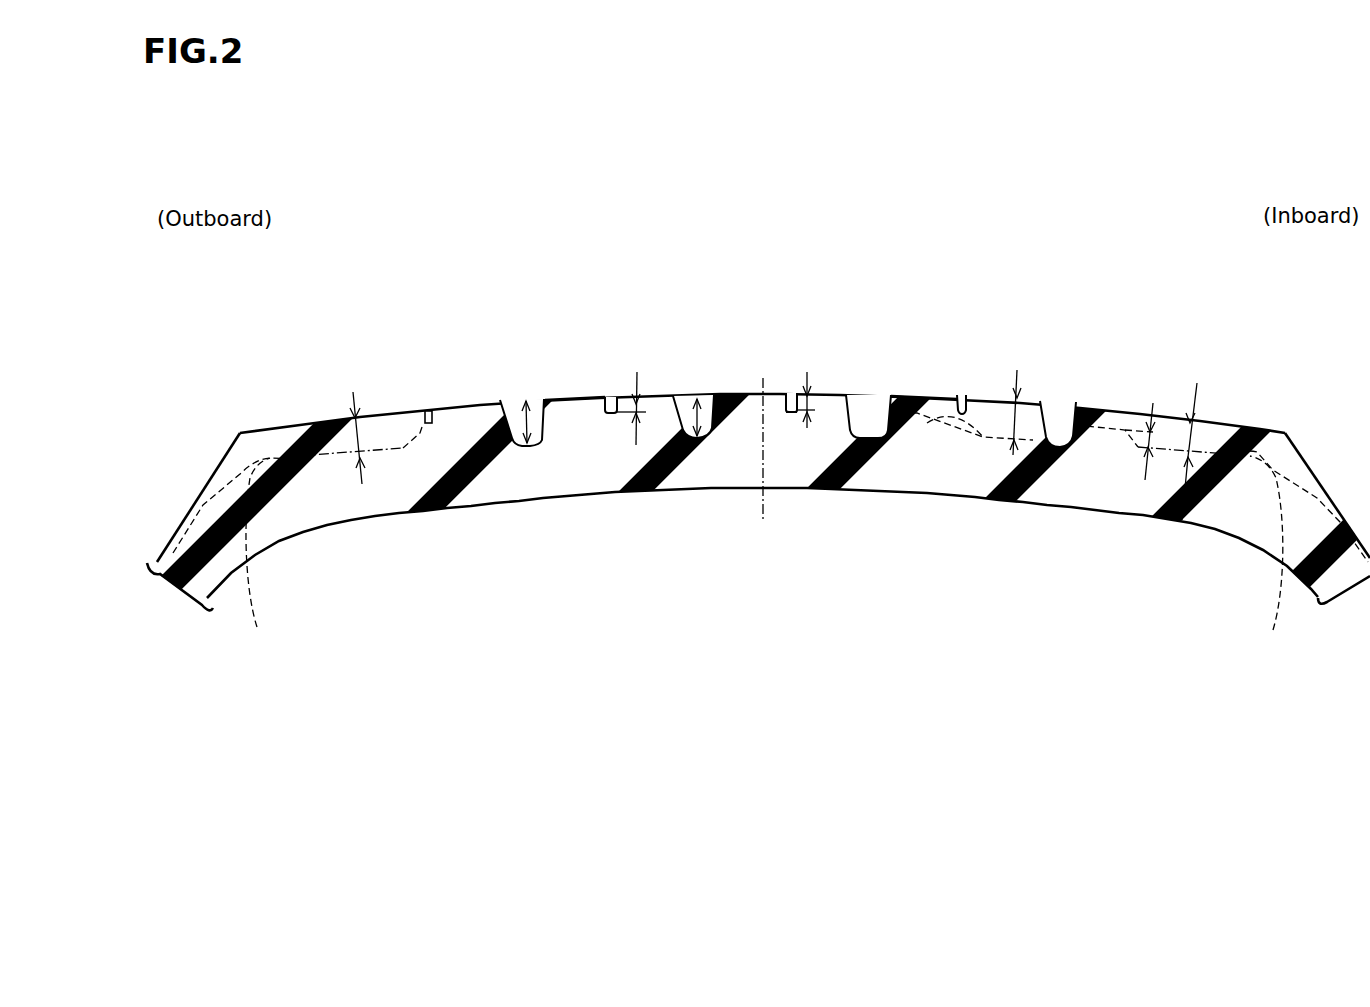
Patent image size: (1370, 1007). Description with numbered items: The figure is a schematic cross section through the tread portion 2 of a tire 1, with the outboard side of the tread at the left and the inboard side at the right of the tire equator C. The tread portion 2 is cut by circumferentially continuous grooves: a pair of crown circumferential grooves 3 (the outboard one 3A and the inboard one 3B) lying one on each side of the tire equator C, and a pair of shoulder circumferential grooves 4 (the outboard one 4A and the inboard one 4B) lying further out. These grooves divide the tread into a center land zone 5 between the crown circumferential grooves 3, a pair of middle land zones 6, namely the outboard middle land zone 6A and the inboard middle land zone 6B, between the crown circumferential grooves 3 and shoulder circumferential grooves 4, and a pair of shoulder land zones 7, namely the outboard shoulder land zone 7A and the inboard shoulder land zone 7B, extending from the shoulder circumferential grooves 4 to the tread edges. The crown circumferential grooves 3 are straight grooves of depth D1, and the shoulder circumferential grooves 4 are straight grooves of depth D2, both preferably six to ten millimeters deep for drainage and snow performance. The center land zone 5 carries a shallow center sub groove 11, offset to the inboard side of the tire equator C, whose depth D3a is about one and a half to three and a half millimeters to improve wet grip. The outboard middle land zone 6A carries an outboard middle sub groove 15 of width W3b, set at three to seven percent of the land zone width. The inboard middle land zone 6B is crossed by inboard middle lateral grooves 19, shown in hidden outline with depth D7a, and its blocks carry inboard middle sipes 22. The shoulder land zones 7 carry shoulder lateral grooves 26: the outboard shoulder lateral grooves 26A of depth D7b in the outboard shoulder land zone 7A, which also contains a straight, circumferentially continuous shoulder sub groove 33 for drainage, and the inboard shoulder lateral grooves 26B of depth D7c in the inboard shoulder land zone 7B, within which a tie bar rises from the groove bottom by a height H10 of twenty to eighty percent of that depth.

The pneumatic tire 1 is at (1199, 228).
The tread portion 2 is at (1103, 290).
The crown circumferential grooves 3 is at (780, 425).
The outboard main groove 3A is at (701, 426).
The inboard main groove 3B is at (873, 405).
The shoulder circumferential grooves 4 is at (787, 432).
The outboard shoulder groove 4A is at (523, 432).
The inboard shoulder groove 4B is at (1060, 428).
The center land zone 5 is at (793, 375).
The middle land zones 6 is at (753, 319).
The outboard middle land zone 6A is at (602, 378).
The inboard middle land zone 6B is at (933, 381).
The shoulder land zones 7 is at (770, 459).
The outboard shoulder land zone 7A is at (309, 460).
The inboard shoulder land zone 7B is at (1174, 457).
The center sub groove 11 is at (790, 414).
The outboard middle sub groove 15 is at (613, 414).
The inboard middle lateral grooves 19 is at (983, 438).
The inboard middle sipes 22 is at (960, 405).
The recesses 26 is at (256, 560).
The outboard shoulder lateral grooves 26A is at (256, 560).
The inboard shoulder lateral grooves 26B is at (1281, 557).
The shoulder sub groove 33 is at (428, 424).
The tire equator C is at (761, 434).
The groove depth of crown circumferential groove D1 is at (688, 437).
The groove depth of shoulder circumferential groove D2 is at (513, 447).
The groove depth of center sub groove D3a is at (810, 382).
The groove depth of inboard middle lateral groove D7a is at (1017, 380).
The groove depth of outboard shoulder lateral groove D7b is at (353, 436).
The groove depth of inboard shoulder lateral groove D7c is at (1192, 442).
The height of tie bar H10 is at (1182, 520).
The groove width of outboard middle sub groove W3b is at (638, 398).